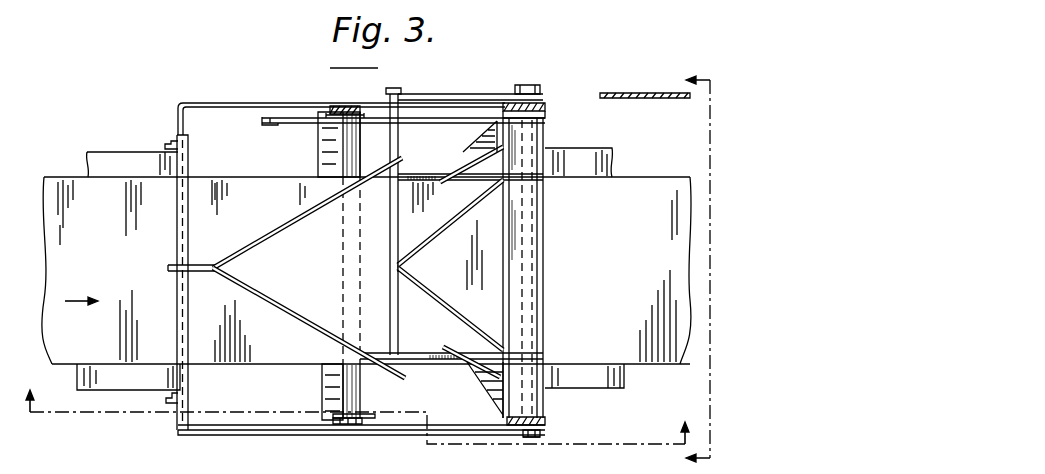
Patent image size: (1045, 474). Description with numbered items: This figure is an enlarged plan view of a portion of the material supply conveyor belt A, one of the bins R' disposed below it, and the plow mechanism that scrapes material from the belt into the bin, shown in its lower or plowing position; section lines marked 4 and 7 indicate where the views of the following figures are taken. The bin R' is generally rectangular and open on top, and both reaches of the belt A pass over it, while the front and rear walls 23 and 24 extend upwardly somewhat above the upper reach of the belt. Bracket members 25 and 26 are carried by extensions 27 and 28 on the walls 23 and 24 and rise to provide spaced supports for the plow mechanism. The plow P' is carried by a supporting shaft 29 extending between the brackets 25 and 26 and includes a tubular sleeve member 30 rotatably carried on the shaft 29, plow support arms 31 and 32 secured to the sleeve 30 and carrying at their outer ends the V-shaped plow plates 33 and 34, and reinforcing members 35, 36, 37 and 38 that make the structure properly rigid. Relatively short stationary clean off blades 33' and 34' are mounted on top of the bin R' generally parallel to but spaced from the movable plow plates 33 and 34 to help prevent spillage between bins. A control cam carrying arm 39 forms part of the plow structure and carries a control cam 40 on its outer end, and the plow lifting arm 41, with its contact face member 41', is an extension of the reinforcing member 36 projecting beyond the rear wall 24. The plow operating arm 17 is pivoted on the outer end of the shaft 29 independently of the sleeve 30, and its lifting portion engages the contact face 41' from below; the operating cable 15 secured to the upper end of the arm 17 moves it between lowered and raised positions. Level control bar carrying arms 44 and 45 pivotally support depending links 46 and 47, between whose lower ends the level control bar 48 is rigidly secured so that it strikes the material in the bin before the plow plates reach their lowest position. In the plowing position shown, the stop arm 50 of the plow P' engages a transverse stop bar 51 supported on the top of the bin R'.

The operating cable 15 is at (628, 99).
The plow operating arm 17 is at (505, 90).
The front wall 23 is at (372, 431).
The rear wall 24 is at (205, 103).
The bracket member 25 is at (547, 422).
The bracket member 26 is at (546, 112).
The extension 27 is at (541, 437).
The extension 28 is at (541, 104).
The supporting shaft 29 is at (528, 438).
The tubular sleeve member 30 is at (545, 263).
The plow support arm 31 is at (407, 351).
The plow support arm 32 is at (406, 182).
The V-shaped plow plate 33 is at (309, 323).
The stationary clean off blade 33' is at (469, 368).
The V-shaped plow plate 34 is at (307, 213).
The stationary clean off blade 34' is at (470, 179).
The reinforcing member 35 is at (352, 210).
The reinforcing member 36 is at (395, 233).
The reinforcing member 37 is at (437, 237).
The reinforcing member 38 is at (466, 302).
The control cam carrying arm 39 is at (472, 134).
The control cam 40 is at (305, 86).
The plow lifting arm 41 is at (413, 224).
The contact face member 41' is at (414, 79).
The level control bar carrying arm 44 is at (365, 414).
The level control bar carrying arm 45 is at (375, 90).
The depending link 46 is at (344, 426).
The depending link 47 is at (338, 106).
The level control bar 48 is at (318, 151).
The stop arm 50 is at (198, 272).
The transverse stop bar 51 is at (188, 213).
The main supply belt A is at (58, 332).
The plow P' is at (282, 334).
The bin R' is at (361, 443).
The section line 4- 4 is at (361, 407).
The section line 7- 7 is at (712, 269).